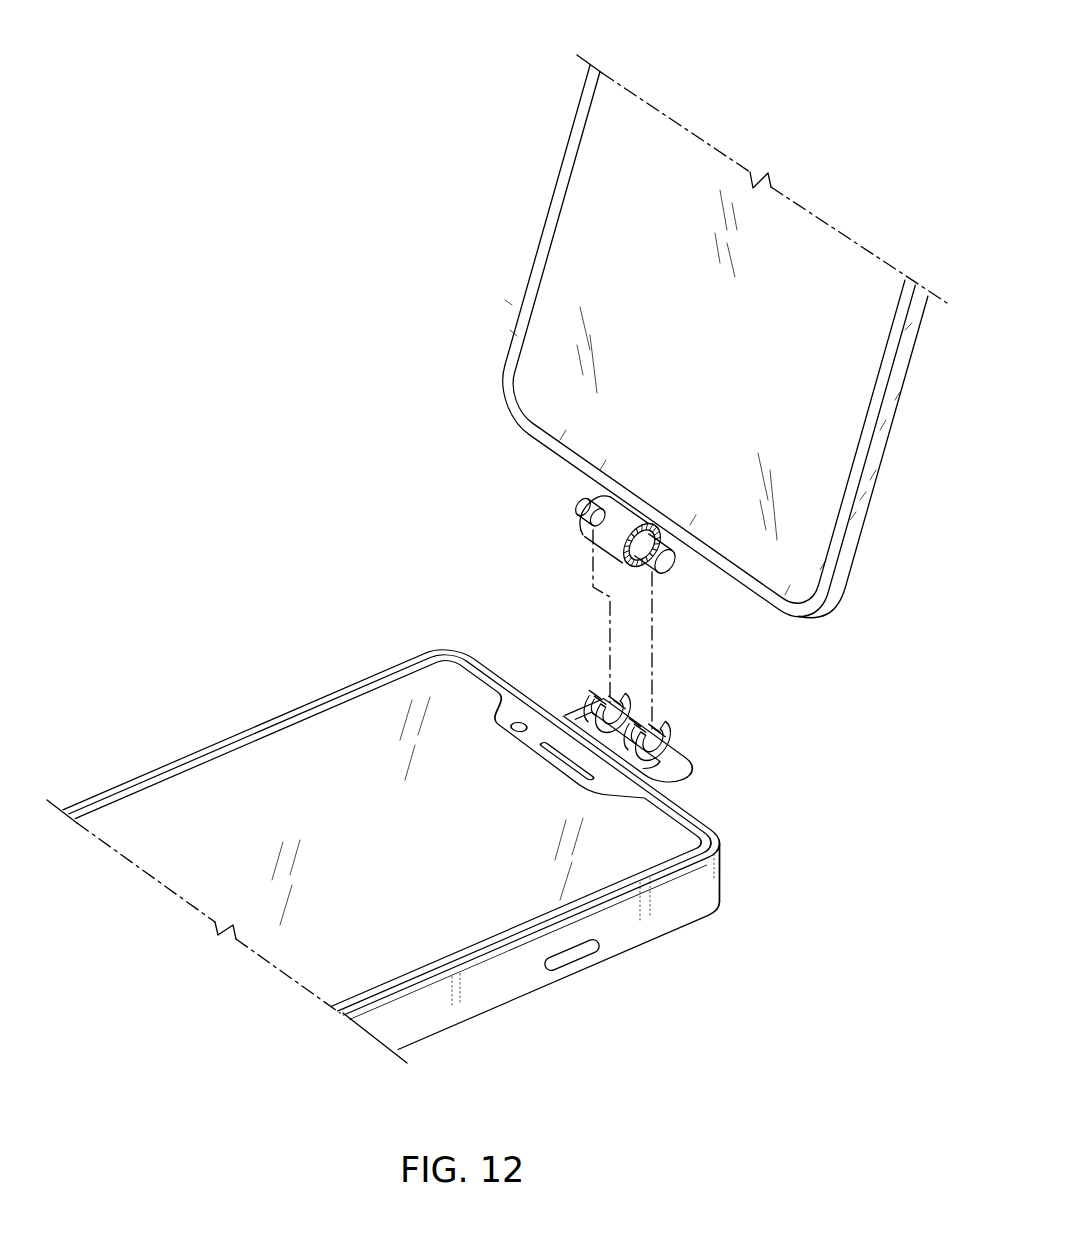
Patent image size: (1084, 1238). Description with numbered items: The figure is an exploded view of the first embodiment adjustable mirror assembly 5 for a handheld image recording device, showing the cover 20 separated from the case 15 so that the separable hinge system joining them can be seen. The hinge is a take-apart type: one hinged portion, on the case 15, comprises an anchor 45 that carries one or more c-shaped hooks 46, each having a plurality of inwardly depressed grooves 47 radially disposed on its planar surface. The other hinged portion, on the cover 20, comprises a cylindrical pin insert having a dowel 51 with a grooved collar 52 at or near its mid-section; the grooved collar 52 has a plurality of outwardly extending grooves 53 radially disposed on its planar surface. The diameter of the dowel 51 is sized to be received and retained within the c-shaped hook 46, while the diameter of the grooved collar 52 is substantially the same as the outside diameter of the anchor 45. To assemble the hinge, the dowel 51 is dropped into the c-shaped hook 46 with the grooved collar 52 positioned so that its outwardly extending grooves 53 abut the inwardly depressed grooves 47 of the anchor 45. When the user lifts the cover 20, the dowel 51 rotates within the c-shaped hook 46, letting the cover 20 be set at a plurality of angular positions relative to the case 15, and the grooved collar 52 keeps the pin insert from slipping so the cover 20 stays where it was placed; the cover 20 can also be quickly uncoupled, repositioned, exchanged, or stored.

The adjustable mirror assembly 5 is at (292, 137).
The case 15 is at (417, 1017).
The cover 20 is at (878, 450).
The anchor 45 is at (683, 765).
The c-shaped hook 46 is at (690, 745).
The inwardly depressed grooves 47 is at (650, 730).
The dowel 51 is at (652, 564).
The grooved collar 52 is at (580, 510).
The outwardly extending grooves 53 is at (622, 565).